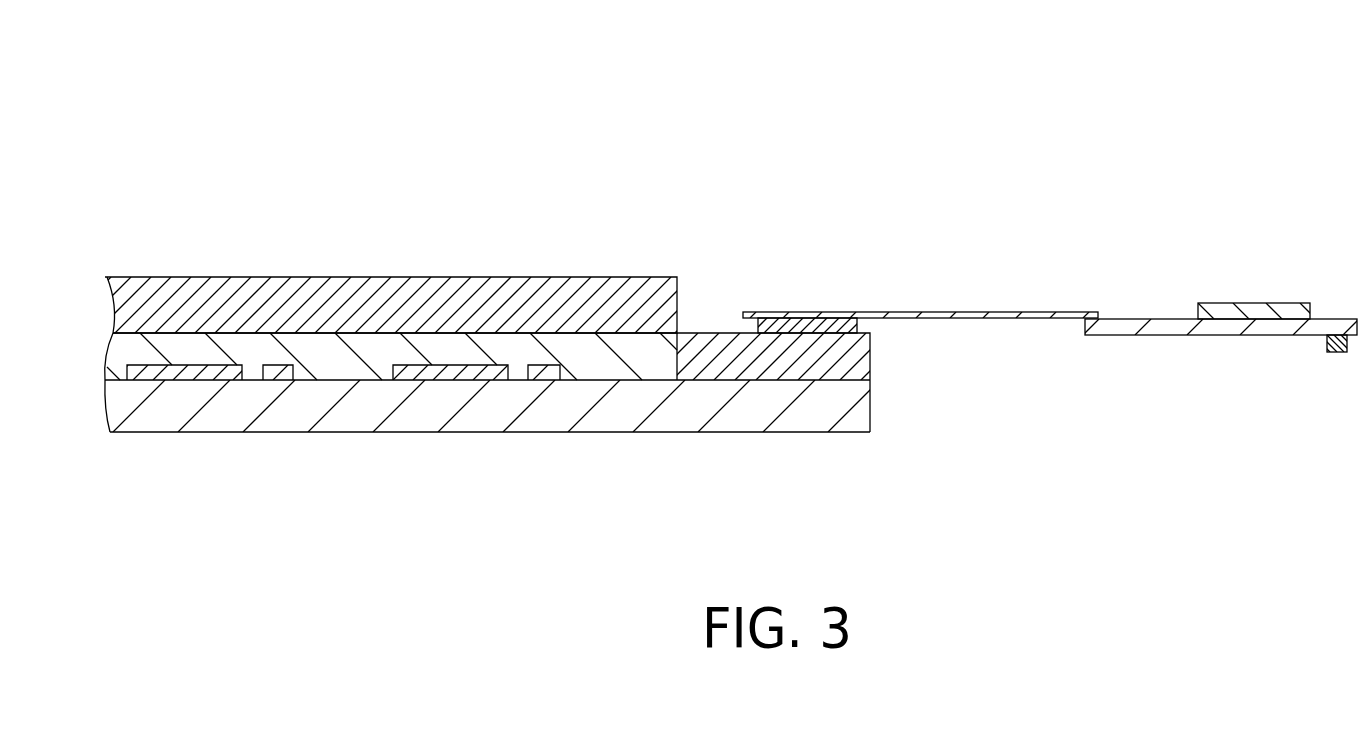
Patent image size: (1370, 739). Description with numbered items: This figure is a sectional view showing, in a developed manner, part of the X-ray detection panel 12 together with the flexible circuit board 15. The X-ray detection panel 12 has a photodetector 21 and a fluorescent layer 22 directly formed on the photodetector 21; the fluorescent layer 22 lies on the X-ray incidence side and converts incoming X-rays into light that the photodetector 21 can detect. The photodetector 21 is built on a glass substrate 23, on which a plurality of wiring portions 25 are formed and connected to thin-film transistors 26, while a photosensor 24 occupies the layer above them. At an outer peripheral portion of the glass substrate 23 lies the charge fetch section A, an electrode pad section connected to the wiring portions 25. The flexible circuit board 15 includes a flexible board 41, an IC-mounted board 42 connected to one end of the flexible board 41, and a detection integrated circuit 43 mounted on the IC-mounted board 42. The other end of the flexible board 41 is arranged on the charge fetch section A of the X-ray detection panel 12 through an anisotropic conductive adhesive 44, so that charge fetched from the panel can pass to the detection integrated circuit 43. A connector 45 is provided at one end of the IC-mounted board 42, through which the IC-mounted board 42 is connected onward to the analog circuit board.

The X-ray detection panel 12 is at (148, 103).
The fluorescent layer 22 is at (173, 298).
The photodetector 21 is at (743, 162).
The thin-film transistor 26 is at (210, 370).
The wiring portion 25 is at (280, 372).
The photosensor 24 is at (377, 350).
The glass substrate 23 is at (613, 398).
The charge fetch section A is at (713, 353).
The flexible circuit board 15 is at (913, 257).
The anisotropic conductive adhesive 44 is at (797, 318).
The flexible board 41 is at (930, 312).
The IC-mounted board 42 is at (1141, 319).
The detection integrated circuit 43 is at (1215, 303).
The connector 45 is at (1337, 352).